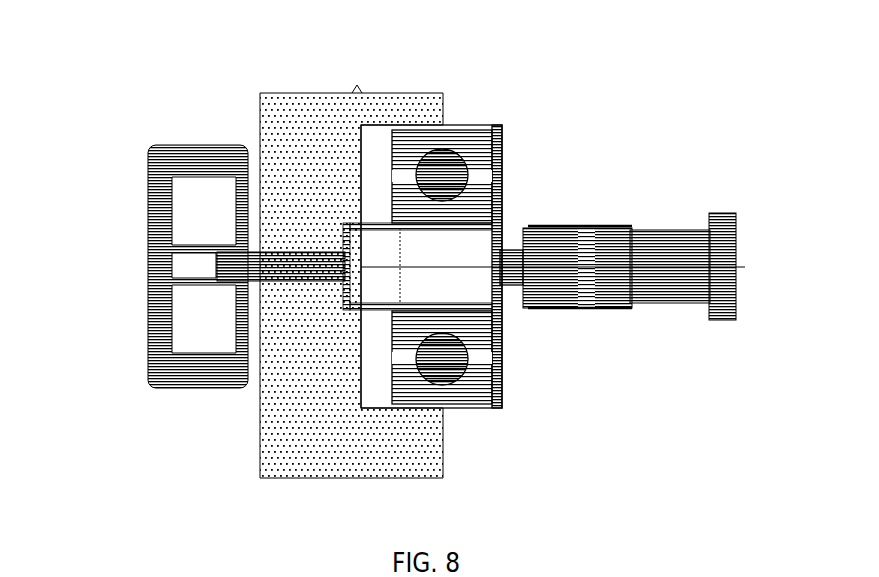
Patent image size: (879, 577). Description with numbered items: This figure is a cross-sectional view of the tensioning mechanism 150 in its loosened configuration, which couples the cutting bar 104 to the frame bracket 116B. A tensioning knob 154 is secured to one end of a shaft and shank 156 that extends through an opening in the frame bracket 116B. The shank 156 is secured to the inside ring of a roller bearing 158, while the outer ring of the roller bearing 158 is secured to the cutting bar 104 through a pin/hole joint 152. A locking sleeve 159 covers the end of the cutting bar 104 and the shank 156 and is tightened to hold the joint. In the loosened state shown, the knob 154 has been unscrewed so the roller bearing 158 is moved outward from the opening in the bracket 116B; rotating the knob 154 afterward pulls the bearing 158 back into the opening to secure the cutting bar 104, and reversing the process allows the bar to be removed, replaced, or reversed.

The frame bracket 116B is at (285, 118).
The tensioning mechanism 150 is at (556, 114).
The pin/hole joint 152 is at (607, 227).
The tensioning knob 154 is at (148, 280).
The shaft and shank 156 is at (283, 283).
The roller bearing 158 is at (478, 388).
The locking sleeve 159 is at (592, 303).
The cutting bar 104 is at (735, 240).